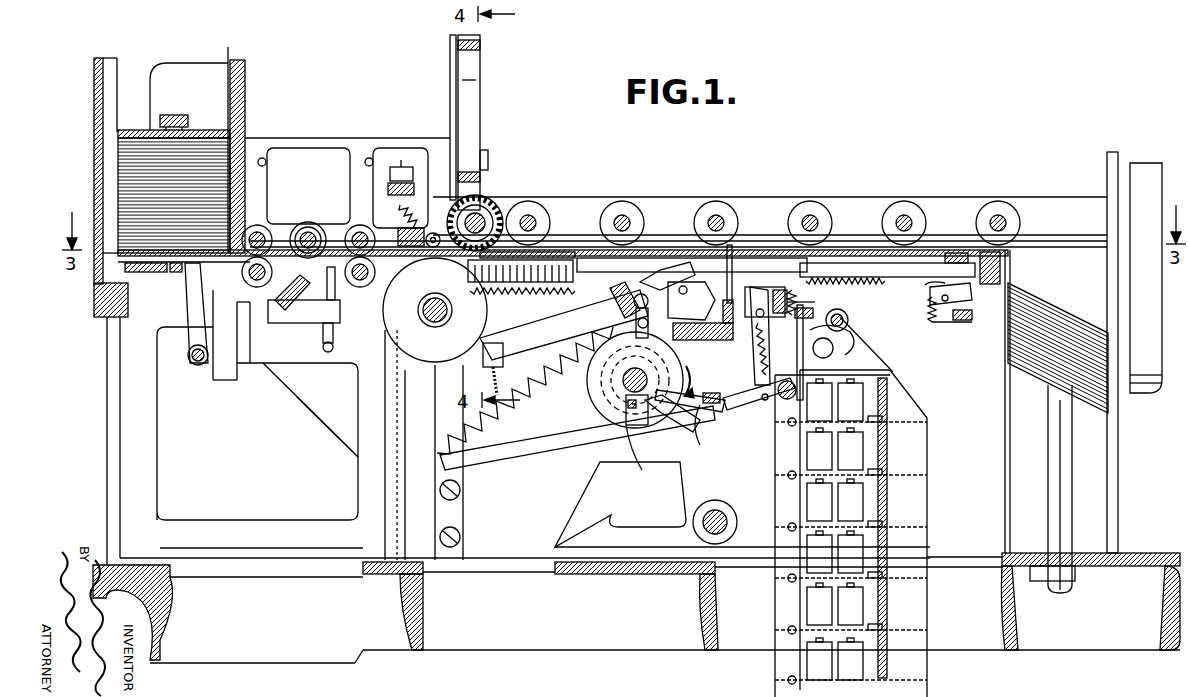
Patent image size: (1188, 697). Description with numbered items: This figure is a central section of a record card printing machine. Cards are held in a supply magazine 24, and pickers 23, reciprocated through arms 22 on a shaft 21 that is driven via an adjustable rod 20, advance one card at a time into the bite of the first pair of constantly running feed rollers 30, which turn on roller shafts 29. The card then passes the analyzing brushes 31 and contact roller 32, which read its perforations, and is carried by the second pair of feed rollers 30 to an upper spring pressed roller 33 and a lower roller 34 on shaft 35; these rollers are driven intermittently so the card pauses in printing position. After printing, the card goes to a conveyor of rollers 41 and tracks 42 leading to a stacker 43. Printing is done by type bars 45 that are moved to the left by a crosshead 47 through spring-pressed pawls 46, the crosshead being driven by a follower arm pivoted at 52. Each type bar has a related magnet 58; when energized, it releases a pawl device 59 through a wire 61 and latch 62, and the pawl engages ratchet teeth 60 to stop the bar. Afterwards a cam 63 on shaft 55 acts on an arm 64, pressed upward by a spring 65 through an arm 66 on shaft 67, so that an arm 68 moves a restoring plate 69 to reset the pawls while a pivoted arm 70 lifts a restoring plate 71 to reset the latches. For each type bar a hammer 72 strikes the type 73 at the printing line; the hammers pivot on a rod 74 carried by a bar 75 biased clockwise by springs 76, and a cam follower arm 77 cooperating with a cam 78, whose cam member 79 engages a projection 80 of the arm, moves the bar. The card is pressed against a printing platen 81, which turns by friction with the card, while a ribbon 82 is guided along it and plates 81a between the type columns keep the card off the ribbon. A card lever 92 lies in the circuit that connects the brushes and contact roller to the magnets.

The adjustable rod 20 is at (305, 396).
The shaft 21 is at (194, 366).
The arms 22 is at (196, 338).
The pickers 23 is at (148, 270).
The supply stack or magazine 24 is at (142, 201).
The roller shafts 29 is at (246, 280).
The feed rollers 30 is at (262, 232).
The brushes 31 is at (270, 305).
The contact roller 32 is at (307, 222).
The upper spring pressed roller 33 is at (444, 150).
The lower roller 34 is at (392, 362).
The shaft 35 is at (388, 334).
The rollers 41 is at (540, 216).
The tracks 42 is at (853, 231).
The stacker 43 is at (1058, 320).
The type bars 45 is at (905, 278).
The spring-pressed pawl 46 is at (968, 305).
The crosshead 47 is at (935, 287).
The pivot 52 is at (720, 516).
The shaft 55 is at (630, 385).
The magnets 58 is at (855, 398).
The pawl device 59 is at (804, 300).
The ratchet teeth 60 is at (845, 284).
The wire 61 is at (776, 460).
The latch 62 is at (770, 299).
The cam 63 is at (604, 418).
The arm 64 is at (552, 465).
The spring 65 is at (770, 380).
The arm 66 is at (745, 413).
The shaft 67 is at (768, 404).
The arm 68 is at (828, 353).
The restoring plate 69 is at (850, 323).
The pivoted arm 70 is at (850, 350).
The restoring plate 71 is at (758, 355).
The hammer 72 is at (541, 341).
The type 73 is at (520, 290).
The rod 74 is at (656, 262).
The bar 75 is at (660, 258).
The springs 76 is at (526, 410).
The cam follower arm 77 is at (645, 300).
The cam 78 is at (590, 370).
The cam member 79 is at (636, 455).
The projection 80 is at (668, 353).
The printing platen 81 is at (480, 207).
The plates 81a is at (433, 306).
The ribbon 82 is at (480, 108).
The card lever 92 is at (400, 165).